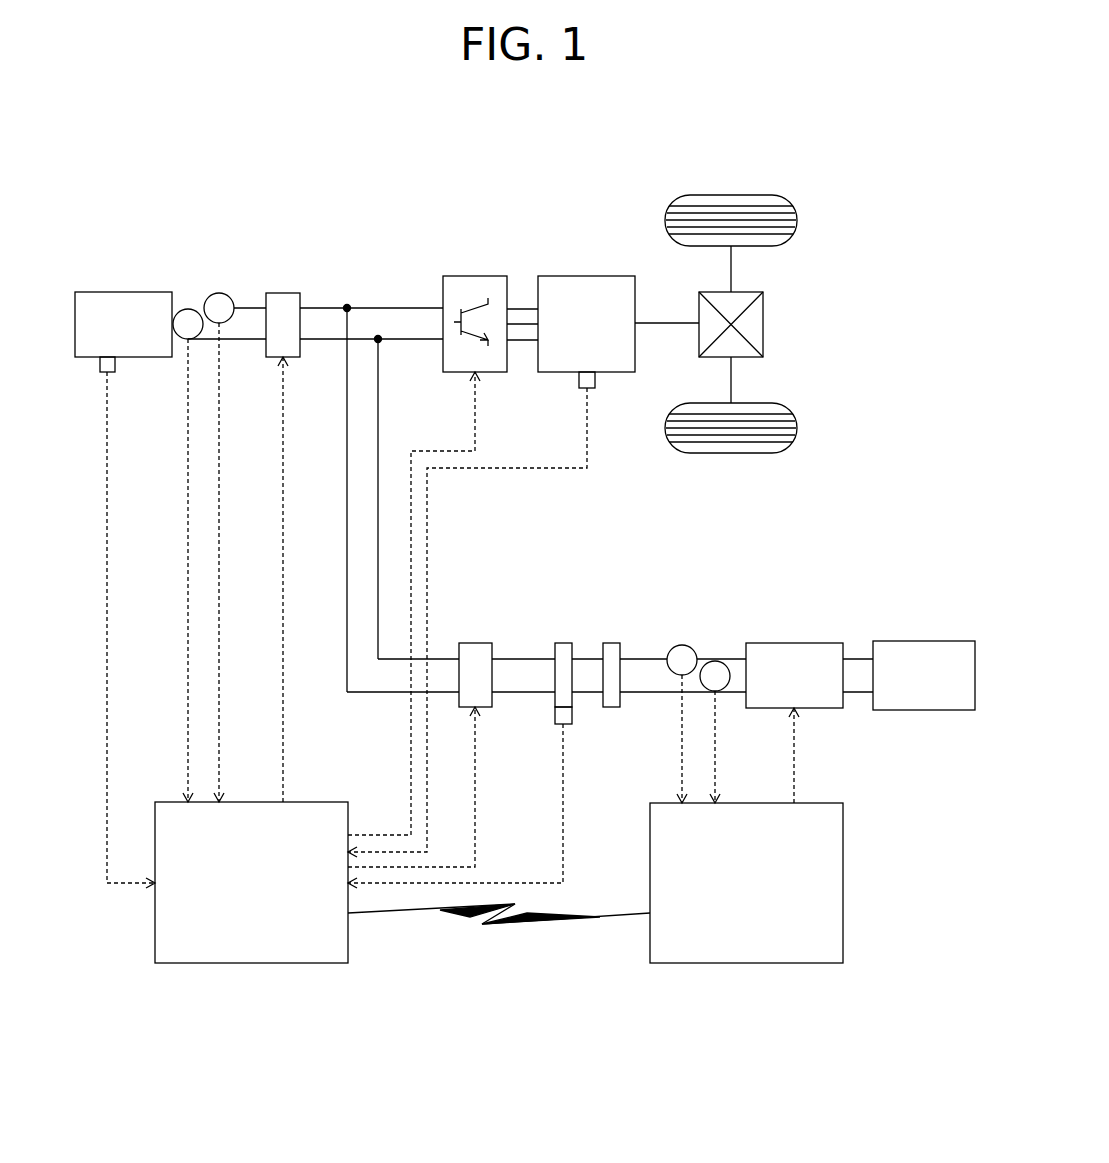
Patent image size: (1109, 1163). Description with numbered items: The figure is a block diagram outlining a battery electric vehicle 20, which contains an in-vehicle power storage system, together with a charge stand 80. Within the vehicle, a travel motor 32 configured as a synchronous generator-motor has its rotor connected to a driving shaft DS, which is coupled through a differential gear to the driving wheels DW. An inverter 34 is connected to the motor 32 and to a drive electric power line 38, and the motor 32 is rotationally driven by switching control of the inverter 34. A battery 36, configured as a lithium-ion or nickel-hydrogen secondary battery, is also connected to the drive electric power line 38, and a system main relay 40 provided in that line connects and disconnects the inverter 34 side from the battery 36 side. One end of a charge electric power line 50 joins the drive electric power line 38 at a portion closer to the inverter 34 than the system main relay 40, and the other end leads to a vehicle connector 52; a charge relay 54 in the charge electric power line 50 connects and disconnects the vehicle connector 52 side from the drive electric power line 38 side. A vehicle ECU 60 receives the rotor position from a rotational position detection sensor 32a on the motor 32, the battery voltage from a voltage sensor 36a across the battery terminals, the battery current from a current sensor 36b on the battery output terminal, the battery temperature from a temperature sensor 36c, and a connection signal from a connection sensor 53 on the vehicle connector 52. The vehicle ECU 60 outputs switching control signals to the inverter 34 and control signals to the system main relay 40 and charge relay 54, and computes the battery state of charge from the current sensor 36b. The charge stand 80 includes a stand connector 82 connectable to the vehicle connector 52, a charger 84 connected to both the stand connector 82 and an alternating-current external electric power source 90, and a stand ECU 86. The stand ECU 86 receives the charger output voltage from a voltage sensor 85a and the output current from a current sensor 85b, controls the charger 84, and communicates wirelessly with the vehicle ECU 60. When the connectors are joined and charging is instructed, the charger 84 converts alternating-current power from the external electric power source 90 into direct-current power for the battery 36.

The battery electric vehicle 20 is at (403, 193).
The travel motor 32 is at (587, 275).
The rotational position detection sensor 32a is at (578, 383).
The inverter 34 is at (476, 275).
The battery 36 is at (125, 290).
The voltage sensor 36a is at (187, 308).
The current sensor 36b is at (220, 292).
The temperature sensor 36c is at (118, 364).
The drive electric power line 38 is at (395, 340).
The system main relay 40 is at (284, 290).
The charge electric power line 50 is at (508, 691).
The vehicle connector 52 is at (565, 641).
The connection sensor 53 is at (552, 714).
The charge relay 54 is at (475, 641).
The vehicle ECU 60 is at (315, 800).
The charge stand 80 is at (762, 610).
The stand connector 82 is at (610, 641).
The charger 84 is at (795, 641).
The voltage sensor 85a is at (715, 660).
The current sensor 85b is at (680, 644).
The stand ECU 86 is at (747, 801).
The external electric power source 90 is at (922, 640).
The driving shaft DS is at (668, 322).
The driving wheels DW is at (731, 194).